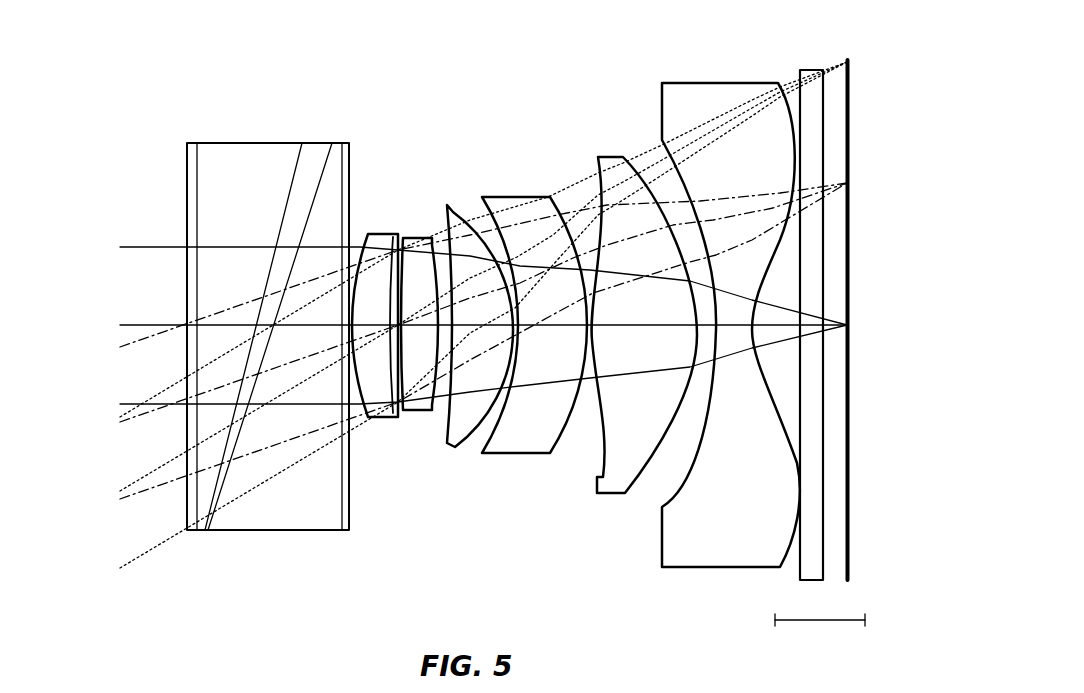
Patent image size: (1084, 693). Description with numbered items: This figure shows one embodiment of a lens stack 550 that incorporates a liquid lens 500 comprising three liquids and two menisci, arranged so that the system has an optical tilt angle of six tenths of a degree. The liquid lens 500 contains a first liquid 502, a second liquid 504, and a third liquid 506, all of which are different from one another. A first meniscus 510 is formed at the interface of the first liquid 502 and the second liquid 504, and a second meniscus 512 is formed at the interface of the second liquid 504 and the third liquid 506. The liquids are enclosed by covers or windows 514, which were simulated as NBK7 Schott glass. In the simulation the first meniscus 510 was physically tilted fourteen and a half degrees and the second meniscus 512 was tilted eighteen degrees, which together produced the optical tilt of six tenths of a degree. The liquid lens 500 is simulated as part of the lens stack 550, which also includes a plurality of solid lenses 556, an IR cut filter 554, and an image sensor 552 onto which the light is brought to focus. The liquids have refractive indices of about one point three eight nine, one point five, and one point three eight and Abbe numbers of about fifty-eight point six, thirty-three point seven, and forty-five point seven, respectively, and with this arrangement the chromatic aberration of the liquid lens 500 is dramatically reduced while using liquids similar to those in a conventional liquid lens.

The liquid lens 500 is at (194, 87).
The first liquid 502 is at (208, 198).
The second liquid 504 is at (317, 155).
The third liquid 506 is at (300, 517).
The first meniscus 510 is at (290, 183).
The second meniscus 512 is at (235, 447).
The covers or windows 514 is at (187, 290).
The lens stack 550 is at (582, 132).
The image sensor 552 is at (850, 238).
The IR cut filter 554 is at (822, 465).
The solid lenses 556 is at (417, 420).